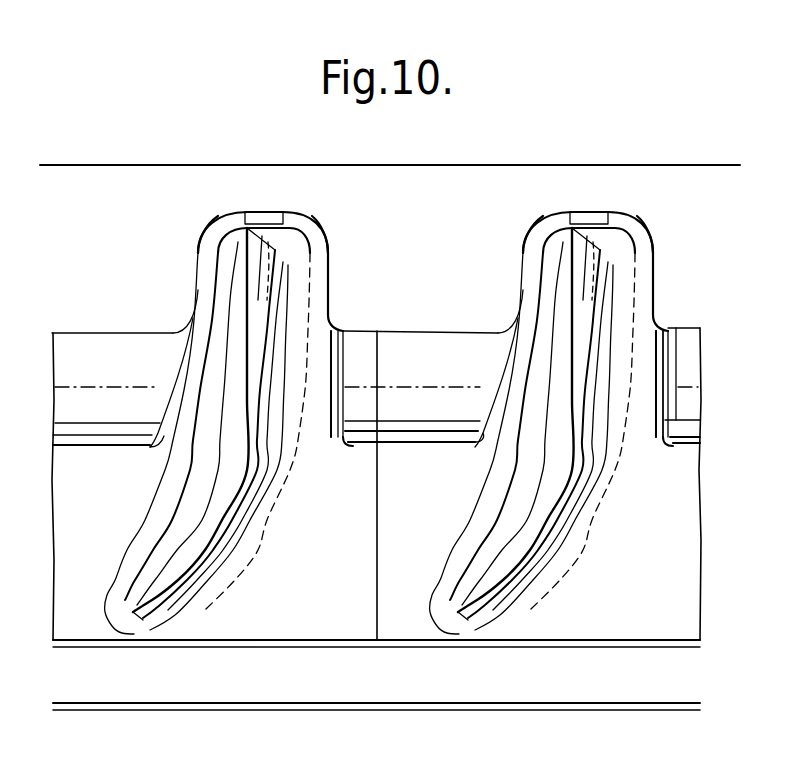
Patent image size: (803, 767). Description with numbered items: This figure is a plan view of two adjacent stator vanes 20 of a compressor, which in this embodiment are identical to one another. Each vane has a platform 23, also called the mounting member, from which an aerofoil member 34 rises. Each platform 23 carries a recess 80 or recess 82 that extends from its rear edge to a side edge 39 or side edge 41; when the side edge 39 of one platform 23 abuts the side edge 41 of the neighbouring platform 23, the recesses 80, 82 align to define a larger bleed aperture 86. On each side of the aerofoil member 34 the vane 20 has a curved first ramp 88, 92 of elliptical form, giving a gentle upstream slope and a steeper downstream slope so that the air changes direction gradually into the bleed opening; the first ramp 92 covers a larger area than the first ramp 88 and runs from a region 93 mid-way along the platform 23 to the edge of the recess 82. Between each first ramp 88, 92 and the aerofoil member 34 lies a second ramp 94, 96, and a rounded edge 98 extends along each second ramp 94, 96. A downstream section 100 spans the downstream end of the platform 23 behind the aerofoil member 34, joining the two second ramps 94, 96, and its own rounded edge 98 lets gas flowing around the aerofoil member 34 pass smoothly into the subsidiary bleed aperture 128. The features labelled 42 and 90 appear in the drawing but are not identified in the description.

The subsidiary bleed aperture 128 is at (78, 190).
The stator vane 20 is at (406, 382).
The larger bleed aperture 86 is at (426, 234).
The downstream section 100 is at (253, 212).
The rounded edge 98 is at (267, 212).
The recess 82 is at (200, 258).
The recess 80 is at (331, 265).
The aerofoil member 34 is at (206, 556).
The first ramp 92 is at (78, 343).
The first ramp 88 is at (356, 345).
The side edge 41 is at (380, 351).
The region 93 is at (105, 446).
The second ramp 96 is at (172, 447).
The second ramp 94 is at (328, 420).
The corner 90 is at (341, 450).
The base block 42 is at (80, 600).
The side edge 39 is at (378, 625).
The platform 23 is at (213, 642).